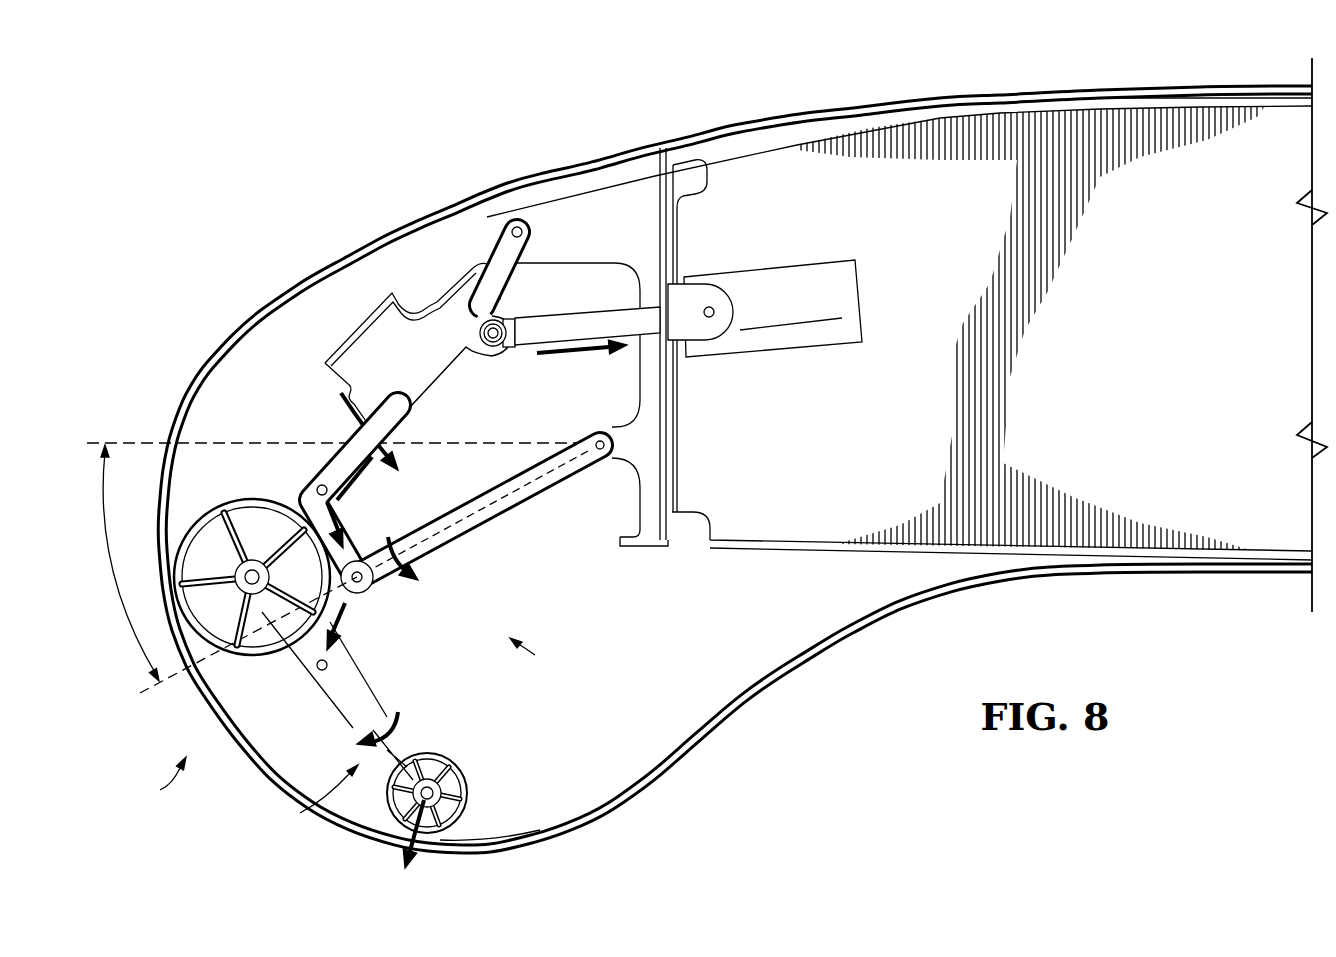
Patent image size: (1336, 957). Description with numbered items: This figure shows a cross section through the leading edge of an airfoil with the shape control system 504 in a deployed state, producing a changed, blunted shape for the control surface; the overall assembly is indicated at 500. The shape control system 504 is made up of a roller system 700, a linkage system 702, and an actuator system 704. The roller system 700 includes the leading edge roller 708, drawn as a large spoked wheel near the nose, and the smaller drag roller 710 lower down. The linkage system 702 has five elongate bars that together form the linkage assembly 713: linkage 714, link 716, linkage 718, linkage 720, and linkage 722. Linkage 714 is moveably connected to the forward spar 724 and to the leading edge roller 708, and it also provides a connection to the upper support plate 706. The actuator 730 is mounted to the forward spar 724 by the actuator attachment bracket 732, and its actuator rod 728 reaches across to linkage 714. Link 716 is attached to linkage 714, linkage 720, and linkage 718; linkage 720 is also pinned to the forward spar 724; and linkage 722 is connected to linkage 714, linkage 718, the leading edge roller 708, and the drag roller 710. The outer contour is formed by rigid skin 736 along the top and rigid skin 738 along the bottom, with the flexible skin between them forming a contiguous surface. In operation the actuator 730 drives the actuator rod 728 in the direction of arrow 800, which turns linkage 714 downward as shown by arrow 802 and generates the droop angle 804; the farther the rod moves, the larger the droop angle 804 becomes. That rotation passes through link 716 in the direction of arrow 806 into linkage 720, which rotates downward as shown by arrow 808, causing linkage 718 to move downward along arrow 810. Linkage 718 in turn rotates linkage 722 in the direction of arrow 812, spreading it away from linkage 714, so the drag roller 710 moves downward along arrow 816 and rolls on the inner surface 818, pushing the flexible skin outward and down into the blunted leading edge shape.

The wing leading edge assembly 500 is at (312, 206).
The shape control system 504 is at (468, 458).
The roller system 700 is at (145, 779).
The linkage system 702 is at (301, 801).
The actuator system 704 is at (801, 357).
The upper support plate 706 is at (355, 333).
The leading edge roller 708 is at (222, 496).
The drag roller 710 is at (455, 762).
The linkage assembly 713 is at (552, 661).
The linkage 714 is at (448, 366).
The link 716 is at (352, 513).
The linkage 718 is at (368, 606).
The linkage 720 is at (517, 520).
The linkage 722 is at (322, 697).
The forward spar 724 is at (628, 195).
The actuator rod 728 is at (565, 315).
The actuator 730 is at (787, 275).
The actuator attachment bracket 732 is at (700, 280).
The rigid skin 736 is at (1160, 92).
The rigid skin 738 is at (1160, 572).
The arrow 800 is at (573, 357).
The arrow 802 is at (340, 402).
The droop angle 804 is at (110, 570).
The arrow 806 is at (305, 487).
The arrow 808 is at (435, 584).
The arrow 810 is at (357, 650).
The arrow 812 is at (402, 725).
The arrow 816 is at (400, 855).
The inner surface 818 is at (487, 833).